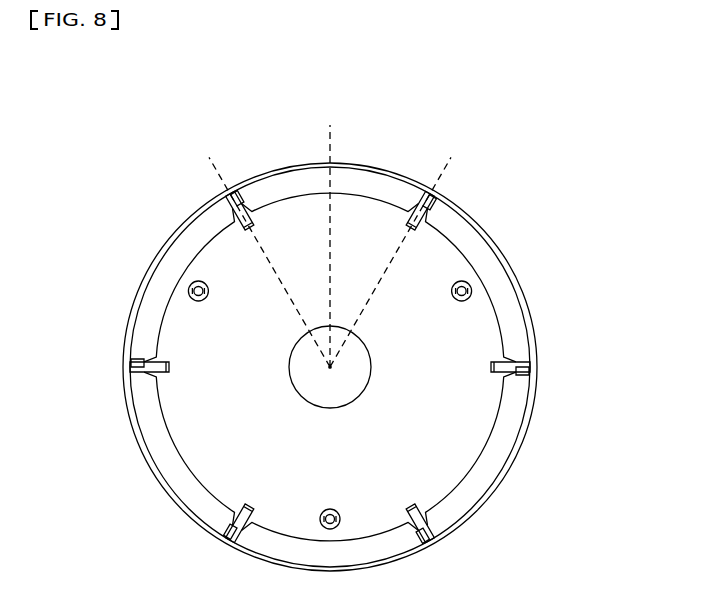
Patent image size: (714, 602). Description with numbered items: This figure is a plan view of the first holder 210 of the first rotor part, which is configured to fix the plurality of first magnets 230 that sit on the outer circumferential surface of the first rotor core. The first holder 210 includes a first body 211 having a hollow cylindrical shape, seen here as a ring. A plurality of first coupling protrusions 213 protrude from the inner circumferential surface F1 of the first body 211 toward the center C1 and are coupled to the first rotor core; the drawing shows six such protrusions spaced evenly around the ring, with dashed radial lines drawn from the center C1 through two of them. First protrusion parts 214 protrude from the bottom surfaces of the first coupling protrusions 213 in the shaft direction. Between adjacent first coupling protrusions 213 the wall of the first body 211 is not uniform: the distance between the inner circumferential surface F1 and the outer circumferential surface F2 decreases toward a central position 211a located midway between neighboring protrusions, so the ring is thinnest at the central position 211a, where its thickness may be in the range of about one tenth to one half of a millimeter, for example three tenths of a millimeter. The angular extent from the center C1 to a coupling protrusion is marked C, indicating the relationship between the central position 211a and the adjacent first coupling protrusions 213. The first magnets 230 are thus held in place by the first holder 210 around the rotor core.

The first holder 210 is at (384, 322).
The first body 211 is at (532, 435).
The central position 211a is at (340, 158).
The first coupling protrusion 213 is at (232, 220).
The first protrusion part 214 is at (238, 190).
The first magnet 230 is at (494, 471).
The angle reference C is at (424, 178).
The center C1 is at (330, 367).
The inner circumferential surface F1 is at (524, 324).
The outer circumferential surface F2 is at (540, 338).